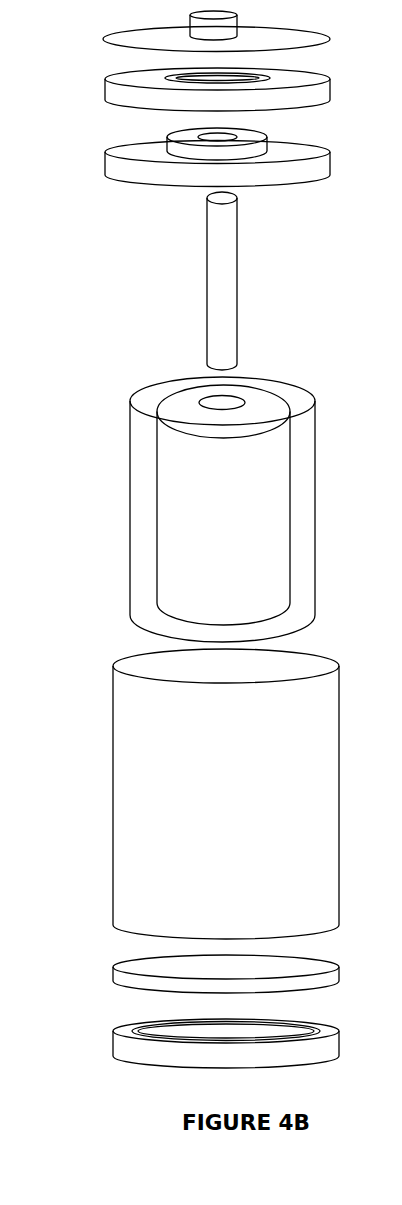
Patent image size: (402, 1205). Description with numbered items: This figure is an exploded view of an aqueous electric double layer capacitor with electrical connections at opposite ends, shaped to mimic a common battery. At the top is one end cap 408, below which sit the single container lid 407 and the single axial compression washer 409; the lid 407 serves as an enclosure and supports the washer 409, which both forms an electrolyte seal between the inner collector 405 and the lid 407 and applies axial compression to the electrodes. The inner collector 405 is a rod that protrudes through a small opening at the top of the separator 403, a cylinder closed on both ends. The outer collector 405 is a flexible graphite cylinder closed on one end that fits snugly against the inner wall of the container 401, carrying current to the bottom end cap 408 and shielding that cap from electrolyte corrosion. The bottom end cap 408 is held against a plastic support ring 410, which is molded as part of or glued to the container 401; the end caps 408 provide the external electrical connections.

The container 401 is at (148, 827).
The separator 403 is at (180, 405).
The collector 405 is at (212, 221).
The container lid 407 is at (148, 97).
The end cap 408 is at (167, 40).
The compression washer 409 is at (148, 167).
The support ring 410 is at (148, 1025).